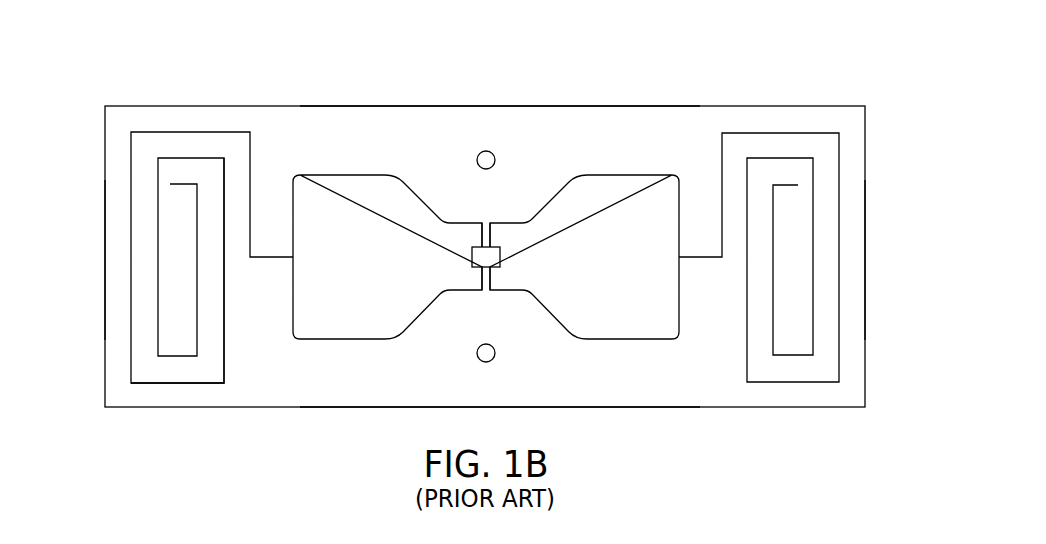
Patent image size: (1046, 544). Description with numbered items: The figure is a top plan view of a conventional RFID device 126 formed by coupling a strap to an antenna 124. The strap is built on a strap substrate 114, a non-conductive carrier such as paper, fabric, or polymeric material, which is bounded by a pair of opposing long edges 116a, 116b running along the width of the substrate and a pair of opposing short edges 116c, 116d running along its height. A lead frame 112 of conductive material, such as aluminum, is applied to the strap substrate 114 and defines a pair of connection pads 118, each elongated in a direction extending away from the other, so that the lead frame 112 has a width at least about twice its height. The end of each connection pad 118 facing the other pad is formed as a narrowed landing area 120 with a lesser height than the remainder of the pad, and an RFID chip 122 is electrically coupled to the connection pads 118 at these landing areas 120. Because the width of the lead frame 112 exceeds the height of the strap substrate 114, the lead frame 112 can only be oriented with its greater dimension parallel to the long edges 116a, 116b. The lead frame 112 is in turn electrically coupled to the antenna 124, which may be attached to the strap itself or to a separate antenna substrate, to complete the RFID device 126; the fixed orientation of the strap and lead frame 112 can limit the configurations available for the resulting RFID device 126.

The lead frame 112 is at (497, 216).
The strap substrate 114 is at (198, 131).
The long edge 116a is at (735, 105).
The long edge 116b is at (735, 408).
The short edge 116c is at (105, 258).
The short edge 116d is at (865, 258).
The connection pad 118 is at (355, 193).
The landing area 120 is at (468, 221).
The RFID chip 122 is at (472, 258).
The antenna 124 is at (180, 384).
The RFID device 126 is at (873, 100).